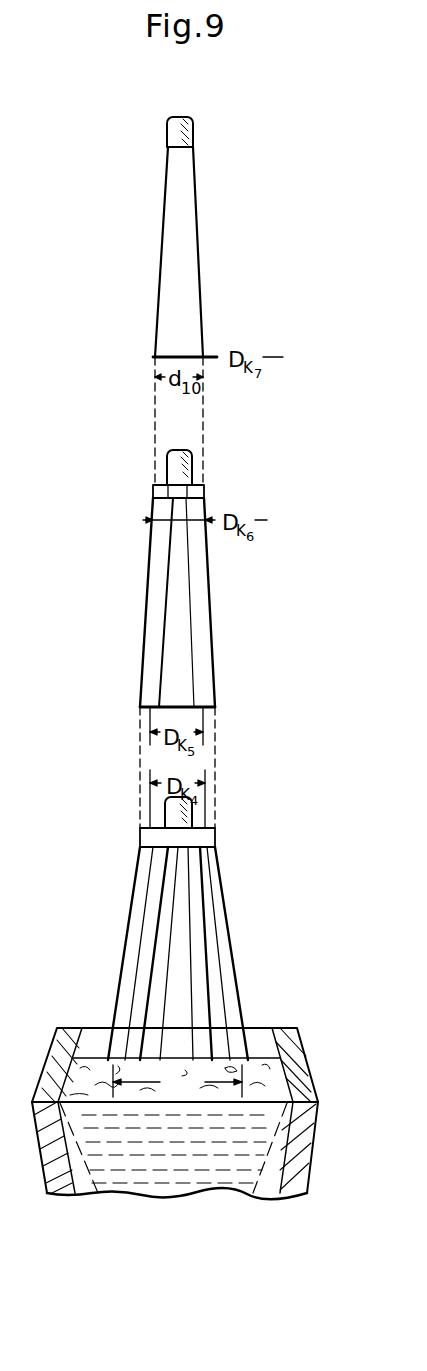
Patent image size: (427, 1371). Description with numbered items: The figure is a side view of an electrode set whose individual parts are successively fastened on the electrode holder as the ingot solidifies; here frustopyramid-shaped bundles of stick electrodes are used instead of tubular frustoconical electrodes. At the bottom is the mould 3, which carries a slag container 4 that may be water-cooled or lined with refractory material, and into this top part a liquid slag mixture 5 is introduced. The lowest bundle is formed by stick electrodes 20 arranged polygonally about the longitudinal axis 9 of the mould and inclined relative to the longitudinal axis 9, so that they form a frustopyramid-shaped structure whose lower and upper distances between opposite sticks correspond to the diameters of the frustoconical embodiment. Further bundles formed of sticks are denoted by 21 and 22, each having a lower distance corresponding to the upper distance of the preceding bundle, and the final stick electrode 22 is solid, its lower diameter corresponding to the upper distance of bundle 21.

The stick electrode bundle 22 is at (190, 257).
The stick electrode bundle 21 is at (222, 578).
The longitudinal axis 9 is at (177, 583).
The stick electrodes 20 is at (222, 928).
The slag container 4 is at (292, 1050).
The liquid slag mixture 5 is at (275, 1083).
The mould 3 is at (300, 1150).